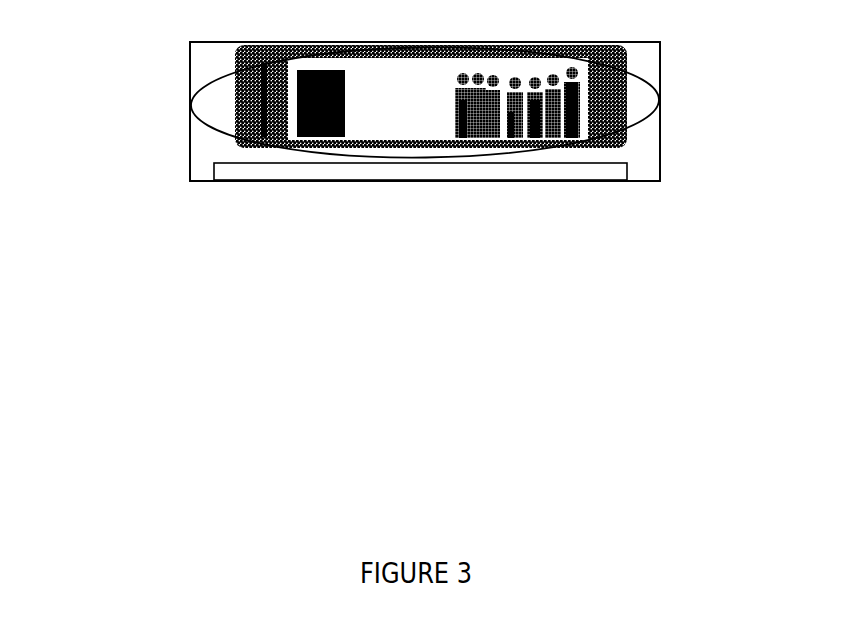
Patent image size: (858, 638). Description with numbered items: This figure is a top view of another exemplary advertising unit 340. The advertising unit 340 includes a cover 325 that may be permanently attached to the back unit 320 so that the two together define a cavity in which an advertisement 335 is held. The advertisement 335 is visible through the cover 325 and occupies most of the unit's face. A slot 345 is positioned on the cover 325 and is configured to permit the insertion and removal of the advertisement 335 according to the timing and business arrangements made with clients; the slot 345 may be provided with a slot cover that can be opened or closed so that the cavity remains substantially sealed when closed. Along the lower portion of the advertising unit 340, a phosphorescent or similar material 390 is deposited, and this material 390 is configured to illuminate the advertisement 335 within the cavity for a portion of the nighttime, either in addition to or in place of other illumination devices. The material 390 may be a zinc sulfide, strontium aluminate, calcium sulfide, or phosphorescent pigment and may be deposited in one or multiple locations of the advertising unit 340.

The advertising unit 340 is at (178, 222).
The back unit 320 is at (196, 168).
The phosphorescent material 390 is at (418, 178).
The advertisement 335 is at (242, 52).
The slot 345 is at (257, 102).
The cover 325 is at (646, 120).